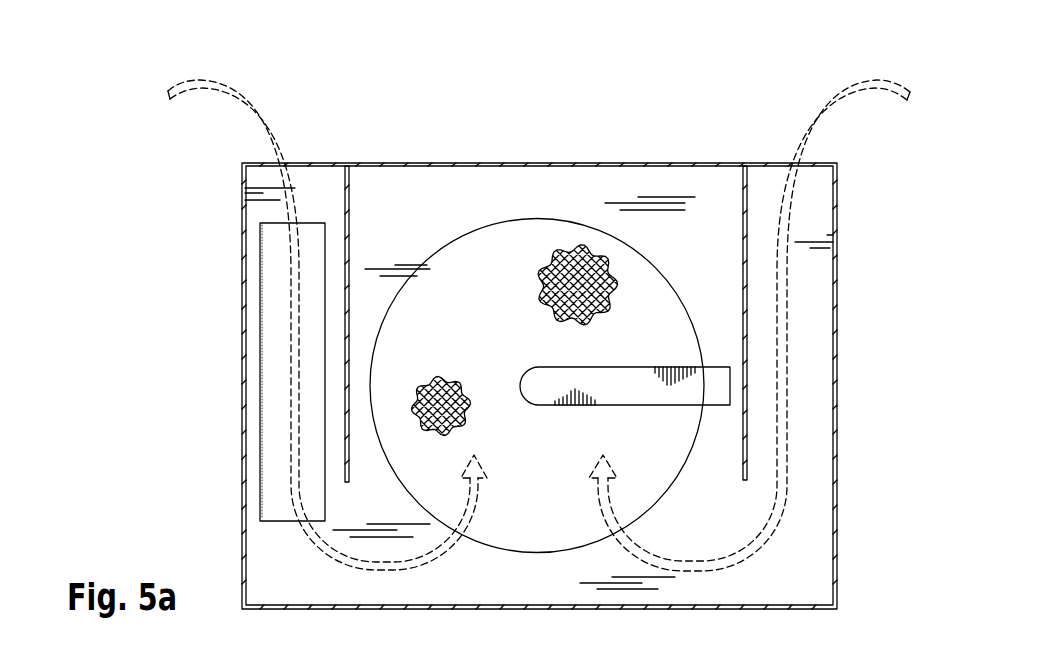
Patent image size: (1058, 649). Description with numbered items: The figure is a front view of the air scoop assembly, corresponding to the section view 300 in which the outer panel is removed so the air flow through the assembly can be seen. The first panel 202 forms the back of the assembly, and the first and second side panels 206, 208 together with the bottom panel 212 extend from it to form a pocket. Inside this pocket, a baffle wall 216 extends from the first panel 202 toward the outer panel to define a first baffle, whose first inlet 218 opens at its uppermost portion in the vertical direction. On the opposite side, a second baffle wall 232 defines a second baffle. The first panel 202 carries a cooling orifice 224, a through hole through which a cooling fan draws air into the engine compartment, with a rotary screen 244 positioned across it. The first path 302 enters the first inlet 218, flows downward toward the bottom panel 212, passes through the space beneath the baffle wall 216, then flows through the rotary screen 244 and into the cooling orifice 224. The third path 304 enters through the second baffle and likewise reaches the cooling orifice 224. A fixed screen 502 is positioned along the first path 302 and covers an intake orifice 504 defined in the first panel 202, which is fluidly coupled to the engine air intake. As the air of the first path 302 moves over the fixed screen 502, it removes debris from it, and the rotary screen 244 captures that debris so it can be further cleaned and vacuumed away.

The section view 300 is at (116, 116).
The first panel 202 is at (427, 232).
The first side panel 206 is at (837, 385).
The second side panel 208 is at (240, 236).
The bottom panel 212 is at (538, 609).
The baffle wall 216 is at (349, 193).
The first inlet 218 is at (310, 148).
The cooling orifice 224 is at (578, 212).
The second baffle wall 232 is at (743, 207).
The rotary screen 244 is at (500, 250).
The first path 302 is at (202, 88).
The third path 304 is at (877, 88).
The fixed screen 502 is at (270, 455).
The intake orifice 504 is at (245, 384).